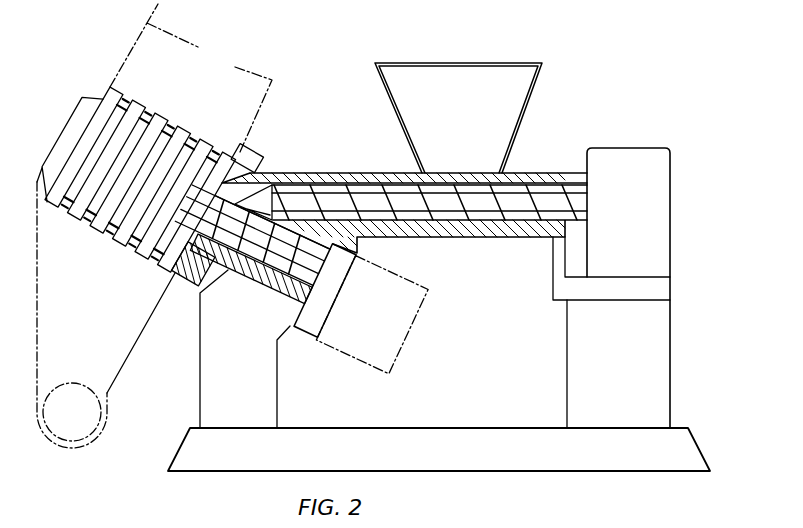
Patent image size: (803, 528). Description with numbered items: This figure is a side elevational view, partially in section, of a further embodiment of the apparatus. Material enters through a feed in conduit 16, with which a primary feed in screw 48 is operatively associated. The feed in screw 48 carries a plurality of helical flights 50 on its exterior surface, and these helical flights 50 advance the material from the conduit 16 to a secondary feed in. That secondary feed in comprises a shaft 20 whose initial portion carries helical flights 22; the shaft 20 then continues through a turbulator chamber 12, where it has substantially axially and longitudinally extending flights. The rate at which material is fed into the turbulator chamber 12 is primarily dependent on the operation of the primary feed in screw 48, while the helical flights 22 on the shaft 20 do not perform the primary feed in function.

The turbulator chamber 12 is at (198, 47).
The feed in conduit 16 is at (514, 99).
The shaft 20 is at (170, 266).
The helical flights 22 is at (282, 290).
The primary feed in screw 48 is at (283, 183).
The helical flights 50 is at (376, 186).